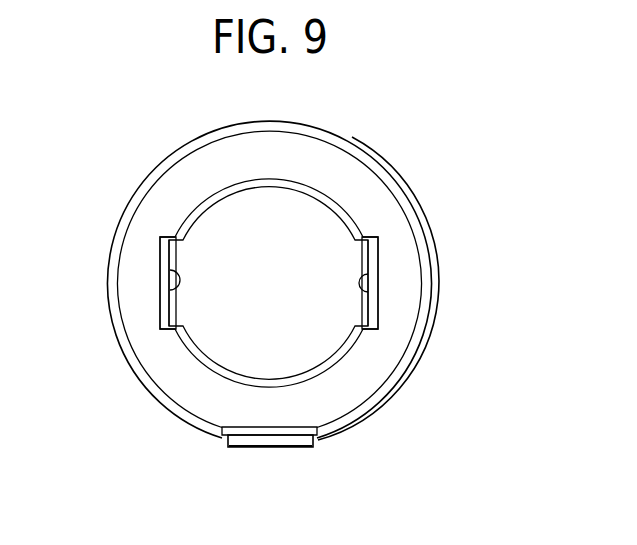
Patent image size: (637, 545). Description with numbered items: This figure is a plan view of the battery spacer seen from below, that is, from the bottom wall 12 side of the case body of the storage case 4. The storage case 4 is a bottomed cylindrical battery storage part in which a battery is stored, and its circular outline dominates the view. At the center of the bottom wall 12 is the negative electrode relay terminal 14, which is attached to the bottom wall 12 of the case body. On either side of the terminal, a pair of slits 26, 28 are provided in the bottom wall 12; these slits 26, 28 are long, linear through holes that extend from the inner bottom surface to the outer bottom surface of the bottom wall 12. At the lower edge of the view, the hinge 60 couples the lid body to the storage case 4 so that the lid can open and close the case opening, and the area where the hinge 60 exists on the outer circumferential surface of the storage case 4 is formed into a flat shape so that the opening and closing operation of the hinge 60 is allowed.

The storage case 4 is at (140, 178).
The bottom wall 12 is at (212, 168).
The negative electrode relay terminal 14 is at (293, 222).
The slit 26 is at (172, 271).
The slit 28 is at (360, 292).
The hinge 60 is at (268, 448).